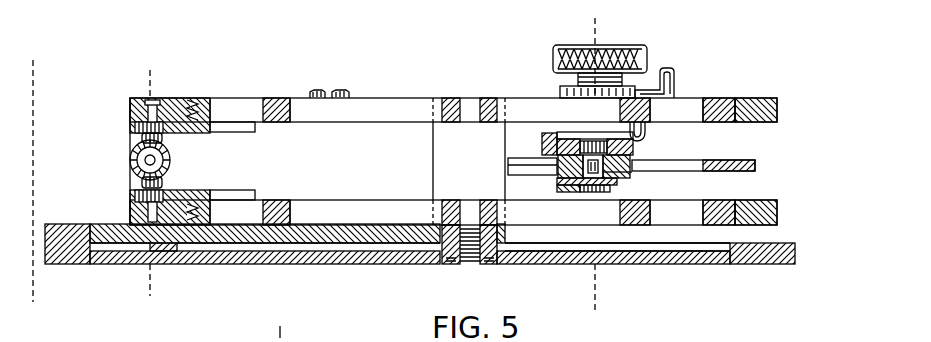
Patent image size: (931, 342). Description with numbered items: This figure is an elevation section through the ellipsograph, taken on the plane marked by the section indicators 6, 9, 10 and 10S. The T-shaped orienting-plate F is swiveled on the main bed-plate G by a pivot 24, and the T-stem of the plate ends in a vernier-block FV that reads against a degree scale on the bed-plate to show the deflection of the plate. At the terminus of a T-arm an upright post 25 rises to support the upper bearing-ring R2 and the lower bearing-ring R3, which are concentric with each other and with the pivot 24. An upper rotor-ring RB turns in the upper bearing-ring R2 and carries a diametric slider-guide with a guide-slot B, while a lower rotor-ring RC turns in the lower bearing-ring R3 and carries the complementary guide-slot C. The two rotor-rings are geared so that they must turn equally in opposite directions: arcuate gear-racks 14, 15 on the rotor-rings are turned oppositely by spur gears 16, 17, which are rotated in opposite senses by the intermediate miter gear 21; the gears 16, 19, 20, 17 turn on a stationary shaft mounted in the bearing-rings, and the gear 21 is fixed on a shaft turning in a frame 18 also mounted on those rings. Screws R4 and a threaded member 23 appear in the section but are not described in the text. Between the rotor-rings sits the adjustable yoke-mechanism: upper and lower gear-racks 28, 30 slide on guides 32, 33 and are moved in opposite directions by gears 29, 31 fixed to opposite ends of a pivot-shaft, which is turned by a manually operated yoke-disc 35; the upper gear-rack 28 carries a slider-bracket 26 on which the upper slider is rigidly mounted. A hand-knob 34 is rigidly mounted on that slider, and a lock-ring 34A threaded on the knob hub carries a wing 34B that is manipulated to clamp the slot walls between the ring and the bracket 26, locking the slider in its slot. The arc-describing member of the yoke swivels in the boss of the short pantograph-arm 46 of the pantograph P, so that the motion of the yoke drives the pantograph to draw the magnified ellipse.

The section plane 10— 10 is at (78, 56).
The section line 10S- 10S is at (185, 66).
The section plane 6— 6 is at (633, 14).
The section plane 9— 9 is at (280, 338).
The upper bearing-ring R2 is at (785, 125).
The lower bearing-ring R3 is at (781, 183).
The upper rotor-ring RB is at (722, 100).
The lower rotor-ring RC is at (710, 200).
The rail screws R4 is at (337, 90).
The guide-slot B is at (468, 105).
The guide-slot C is at (468, 205).
The orienting-plate F is at (364, 232).
The main bed-plate G is at (340, 264).
The vernier-block FV is at (110, 224).
The arcuate gear-rack 14 is at (245, 132).
The arcuate gear-rack 15 is at (240, 190).
The spur gear 16 is at (135, 128).
The spur gear 17 is at (135, 192).
The frame 18 is at (172, 160).
The gear 19 is at (163, 137).
The gear 20 is at (164, 180).
The intermediate miter gear 21 is at (132, 158).
The threaded bolt 23 is at (478, 265).
The pivot 24 is at (505, 240).
The upright post 25 is at (433, 148).
The short pantograph-arm 46 is at (505, 170).
The slider-bracket 26 is at (645, 135).
The upper gear-rack 28 is at (608, 120).
The gear 29 is at (590, 133).
The lower gear-rack 30 is at (558, 190).
The gear 31 is at (612, 189).
The guide 32 is at (545, 145).
The guide 33 is at (620, 182).
The hand-knob 34 is at (552, 62).
The lock-ring 34A is at (560, 92).
The wing 34B is at (668, 76).
The yoke-disc 35 is at (562, 135).
The pantograph P is at (745, 160).